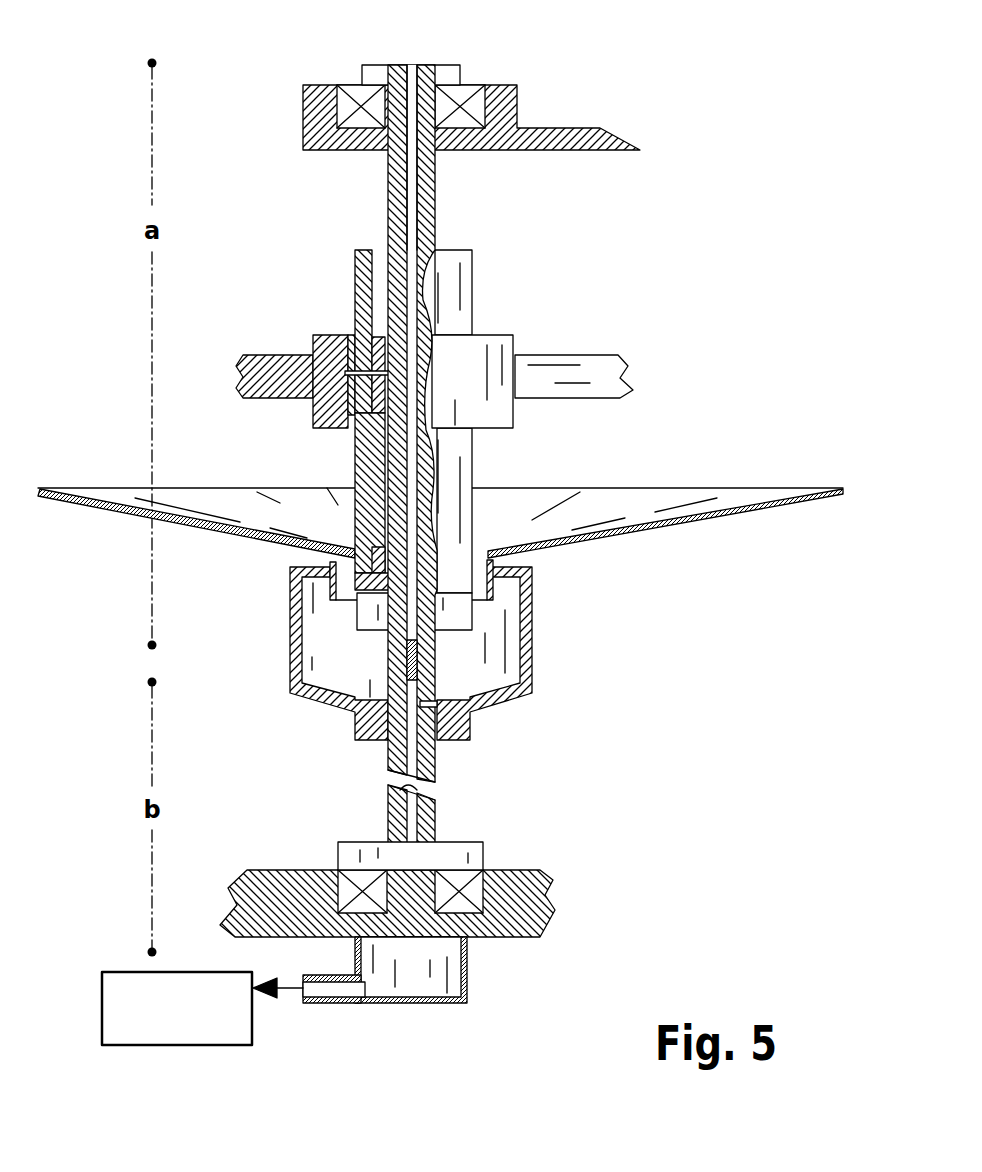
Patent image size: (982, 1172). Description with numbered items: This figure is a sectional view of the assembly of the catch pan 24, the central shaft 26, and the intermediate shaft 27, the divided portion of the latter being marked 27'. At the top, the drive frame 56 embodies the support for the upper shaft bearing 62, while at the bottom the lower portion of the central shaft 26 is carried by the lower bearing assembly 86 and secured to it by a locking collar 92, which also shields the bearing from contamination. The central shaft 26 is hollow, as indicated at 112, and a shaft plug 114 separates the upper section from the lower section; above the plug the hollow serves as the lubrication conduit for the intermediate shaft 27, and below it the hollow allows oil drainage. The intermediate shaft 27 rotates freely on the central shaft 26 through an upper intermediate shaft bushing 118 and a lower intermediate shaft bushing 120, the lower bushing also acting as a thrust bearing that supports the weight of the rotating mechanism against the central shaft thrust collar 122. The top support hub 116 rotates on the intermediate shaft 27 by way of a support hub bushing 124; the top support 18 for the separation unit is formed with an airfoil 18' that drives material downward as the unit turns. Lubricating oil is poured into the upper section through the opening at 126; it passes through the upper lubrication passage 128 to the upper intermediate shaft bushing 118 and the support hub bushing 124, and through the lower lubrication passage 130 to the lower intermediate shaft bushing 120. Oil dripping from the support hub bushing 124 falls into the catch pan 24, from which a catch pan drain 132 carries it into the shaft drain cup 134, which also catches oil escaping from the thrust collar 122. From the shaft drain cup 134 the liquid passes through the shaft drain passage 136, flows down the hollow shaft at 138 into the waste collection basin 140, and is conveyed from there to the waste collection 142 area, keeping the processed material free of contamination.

The top support 18 is at (259, 353).
The airfoil 18' is at (574, 354).
The catch pan 24 is at (723, 520).
The central shaft 26 is at (388, 804).
The intermediate shaft 27 is at (350, 309).
The intermediate shaft 27' is at (480, 421).
The drive frame 56 is at (592, 152).
The upper shaft bearing 62 is at (462, 84).
The lower bearing assembly 86 is at (460, 900).
The locking collar 92 is at (463, 842).
The shaft hollow 112 is at (412, 228).
The shaft plug 114 is at (388, 663).
The top support hub 116 is at (500, 335).
The upper intermediate shaft bushing 118 is at (380, 334).
The lower intermediate shaft bushing 120 is at (355, 520).
The central shaft thrust collar 122 is at (357, 617).
The support hub bushing 124 is at (345, 335).
The opening 126 is at (410, 66).
The upper lubrication passage 128 is at (403, 373).
The lower lubrication passage 130 is at (392, 571).
The catch pan drain 132 is at (475, 556).
The shaft drain cup 134 is at (530, 680).
The shaft drain passage 136 is at (460, 692).
The hollow shaft 138 is at (413, 788).
The waste collection basin 140 is at (445, 1003).
The waste collection 142 is at (253, 1017).